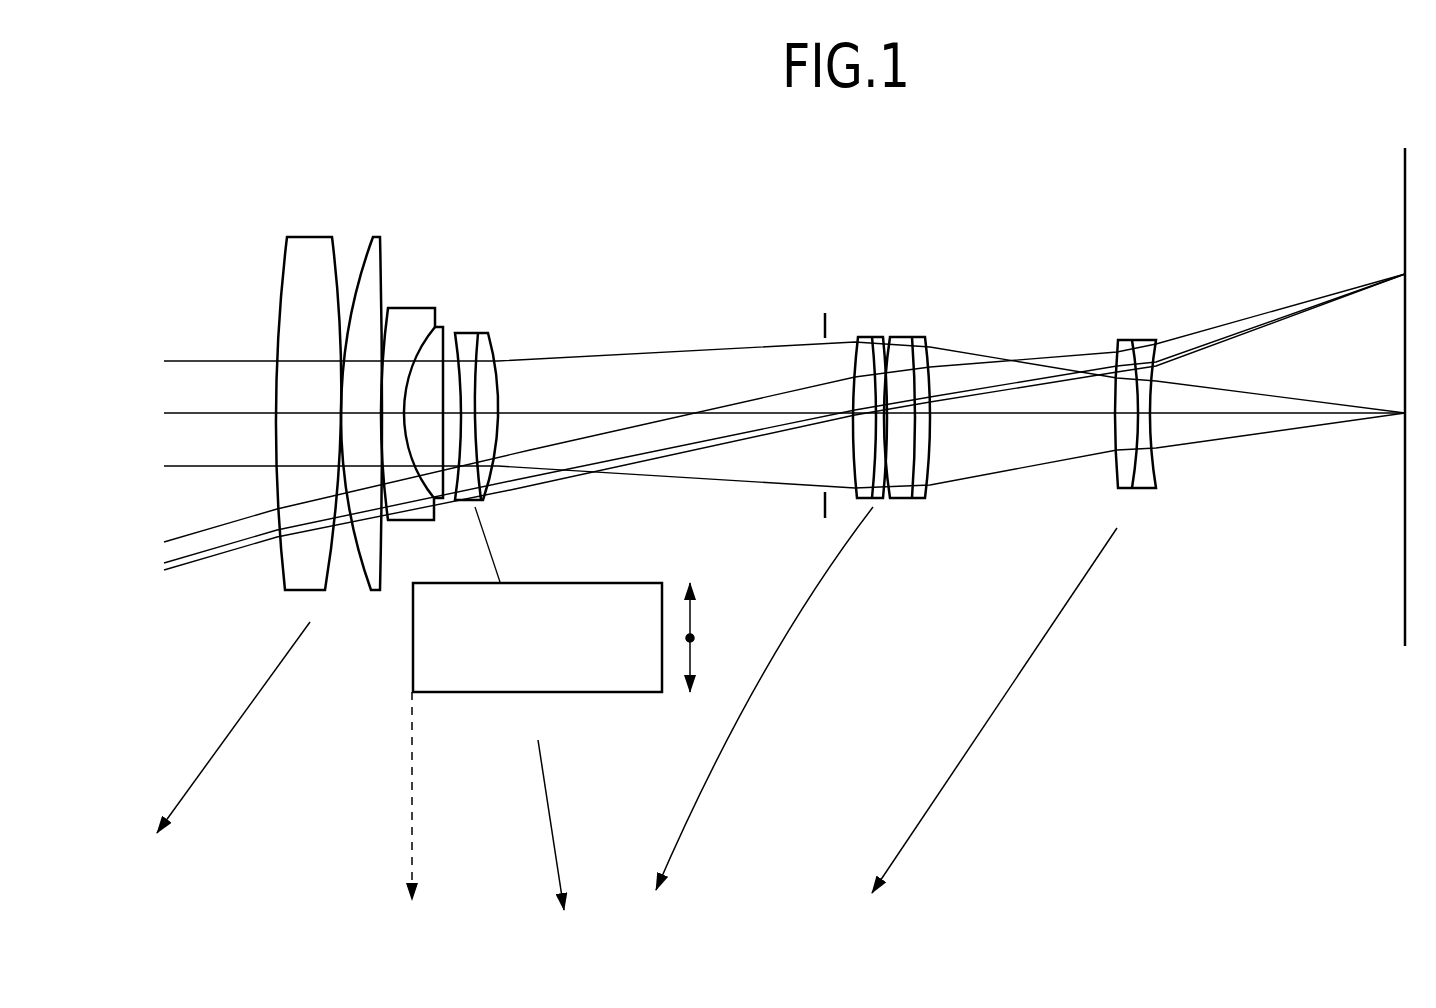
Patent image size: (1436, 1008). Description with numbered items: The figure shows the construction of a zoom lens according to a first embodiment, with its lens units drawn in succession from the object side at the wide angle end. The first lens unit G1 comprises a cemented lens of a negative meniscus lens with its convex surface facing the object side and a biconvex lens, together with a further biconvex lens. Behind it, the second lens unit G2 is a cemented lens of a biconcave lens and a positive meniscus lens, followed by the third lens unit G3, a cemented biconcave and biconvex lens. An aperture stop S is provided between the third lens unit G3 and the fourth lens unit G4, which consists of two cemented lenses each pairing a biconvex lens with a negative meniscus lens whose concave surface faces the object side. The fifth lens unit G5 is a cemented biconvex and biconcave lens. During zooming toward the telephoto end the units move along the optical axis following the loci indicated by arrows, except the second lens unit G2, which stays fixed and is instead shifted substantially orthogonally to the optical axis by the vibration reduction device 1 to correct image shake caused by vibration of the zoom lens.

The first lens unit G1 is at (387, 222).
The second lens unit G2 is at (412, 583).
The third lens unit G3 is at (498, 321).
The fourth lens unit G4 is at (930, 319).
The fifth lens unit G5 is at (1172, 316).
The aperture stop S is at (825, 318).
The vibration reduction device 1 is at (620, 693).